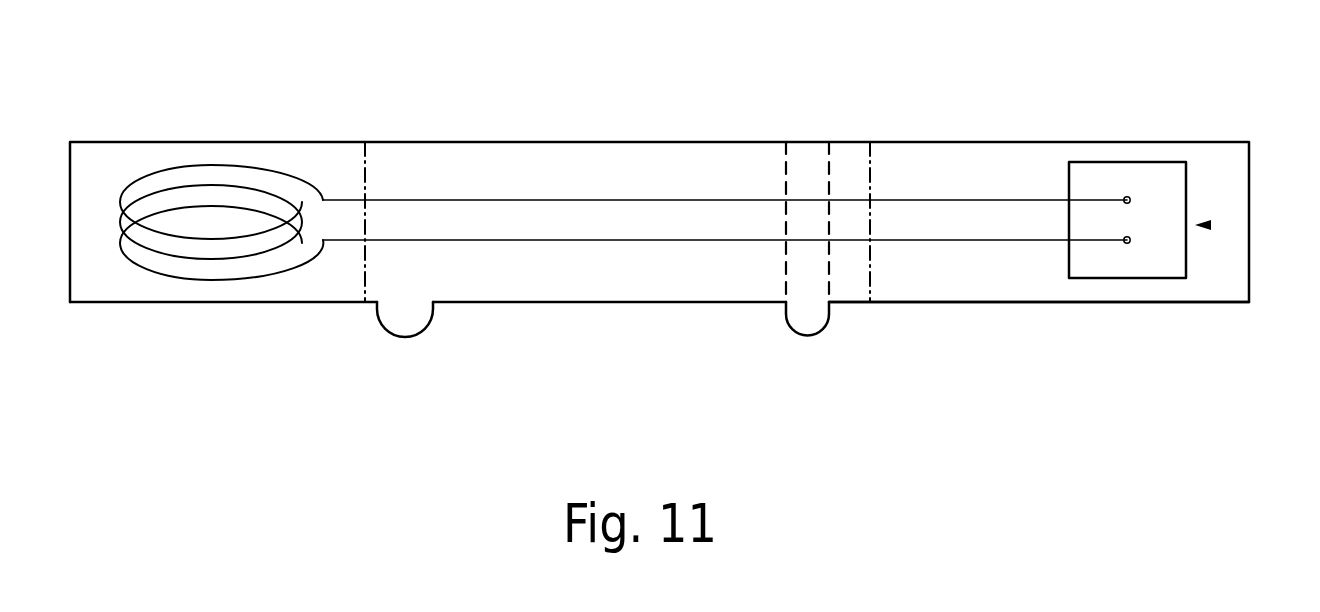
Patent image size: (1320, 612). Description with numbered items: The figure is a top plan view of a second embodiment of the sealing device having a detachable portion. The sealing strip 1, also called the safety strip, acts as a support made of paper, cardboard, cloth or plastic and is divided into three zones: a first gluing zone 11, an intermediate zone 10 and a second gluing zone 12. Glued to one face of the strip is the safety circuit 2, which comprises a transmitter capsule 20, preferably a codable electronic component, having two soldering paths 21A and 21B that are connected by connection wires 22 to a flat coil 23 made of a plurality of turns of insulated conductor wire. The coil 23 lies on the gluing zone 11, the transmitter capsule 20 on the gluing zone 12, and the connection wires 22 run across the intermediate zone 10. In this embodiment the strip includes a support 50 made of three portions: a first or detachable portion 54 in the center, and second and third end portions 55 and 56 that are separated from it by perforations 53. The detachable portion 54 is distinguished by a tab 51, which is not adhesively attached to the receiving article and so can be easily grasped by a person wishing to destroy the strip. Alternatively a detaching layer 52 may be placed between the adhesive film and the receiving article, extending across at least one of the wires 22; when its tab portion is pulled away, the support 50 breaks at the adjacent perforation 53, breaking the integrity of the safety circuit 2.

The sealing strip 1 is at (754, 124).
The safety circuit 2 is at (1208, 225).
The intermediate zone 10 is at (613, 172).
The gluing zone 11 is at (218, 153).
The gluing zone 12 is at (1013, 170).
The transmitter capsule 20 is at (1169, 188).
The soldering path 21A is at (1128, 243).
The soldering path 21B is at (1130, 196).
The connection wires 22 is at (595, 242).
The flat coil 23 is at (225, 282).
The support 50 is at (728, 277).
The tab 51 is at (407, 320).
The detaching layer 52 is at (812, 317).
The perforations 53 is at (366, 183).
The detachable portion 54 is at (543, 272).
The second portion 55 is at (325, 285).
The third portion 56 is at (1022, 273).